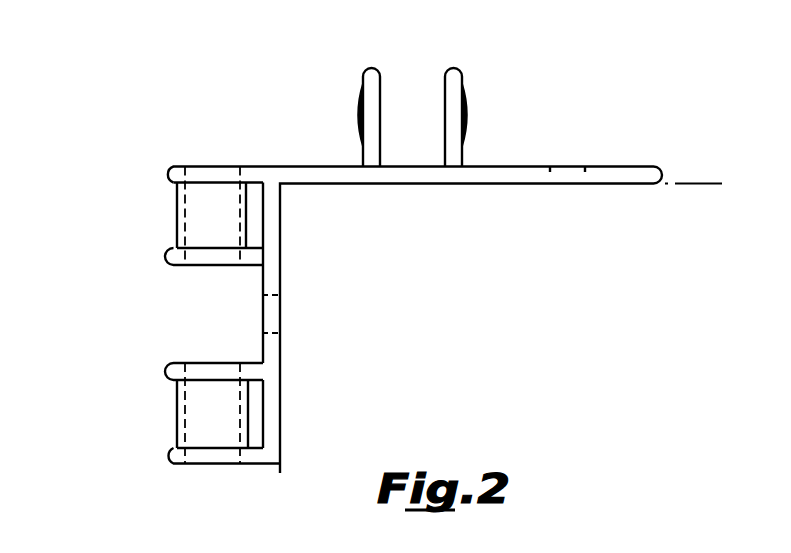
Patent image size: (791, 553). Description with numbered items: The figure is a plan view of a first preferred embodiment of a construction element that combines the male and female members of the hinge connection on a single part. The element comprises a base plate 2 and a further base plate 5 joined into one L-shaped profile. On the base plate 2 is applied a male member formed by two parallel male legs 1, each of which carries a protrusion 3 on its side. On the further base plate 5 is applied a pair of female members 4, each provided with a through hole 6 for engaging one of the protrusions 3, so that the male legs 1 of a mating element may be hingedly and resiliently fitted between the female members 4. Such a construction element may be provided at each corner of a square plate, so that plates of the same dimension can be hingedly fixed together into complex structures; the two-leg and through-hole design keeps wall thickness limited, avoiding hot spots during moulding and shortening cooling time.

The male legs 1 is at (453, 75).
The base plate 2 is at (297, 170).
The protrusion 3 is at (465, 115).
The female members 4 is at (176, 216).
The further base plate 5 is at (272, 282).
The through hole 6 is at (210, 410).